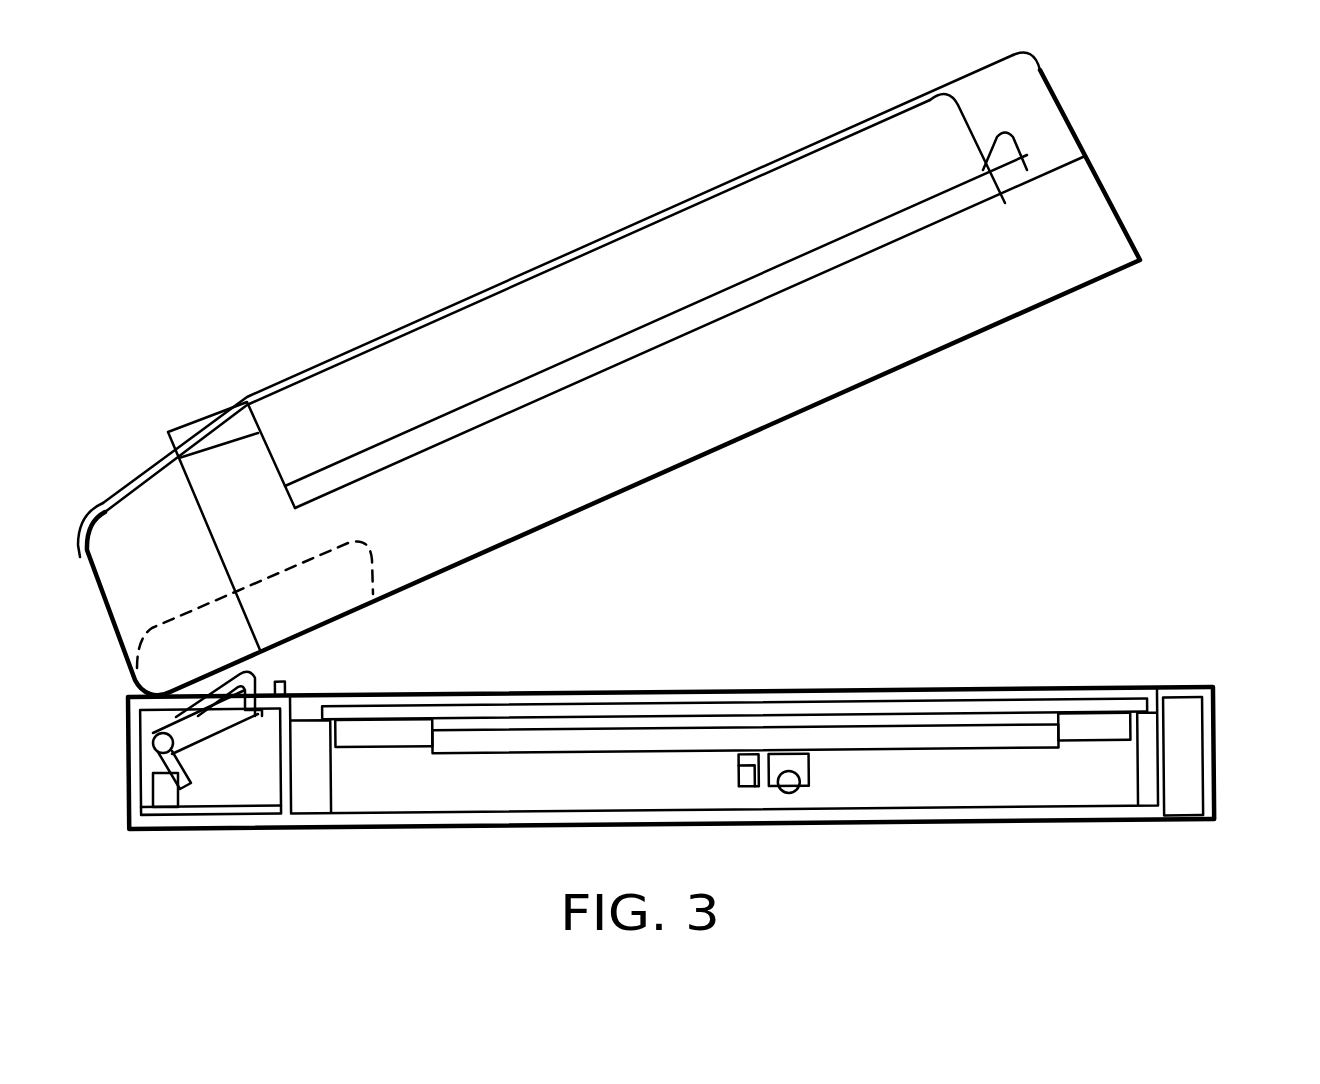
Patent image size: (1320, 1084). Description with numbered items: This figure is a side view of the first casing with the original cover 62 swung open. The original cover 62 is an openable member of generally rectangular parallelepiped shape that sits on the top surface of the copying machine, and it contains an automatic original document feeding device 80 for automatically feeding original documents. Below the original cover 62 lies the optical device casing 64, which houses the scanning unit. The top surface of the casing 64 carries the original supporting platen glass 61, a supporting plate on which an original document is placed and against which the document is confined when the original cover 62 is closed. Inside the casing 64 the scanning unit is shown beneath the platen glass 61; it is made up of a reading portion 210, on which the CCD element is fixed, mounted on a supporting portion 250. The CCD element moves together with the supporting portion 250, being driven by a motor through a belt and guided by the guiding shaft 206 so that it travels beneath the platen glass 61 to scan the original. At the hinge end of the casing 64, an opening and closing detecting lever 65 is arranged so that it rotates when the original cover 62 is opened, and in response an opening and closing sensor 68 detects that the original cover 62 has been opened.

The original cover 62 is at (1110, 200).
The automatic original document feeding device 80 is at (552, 261).
The optical device casing 64 is at (1215, 751).
The original supporting platen glass 61 is at (823, 694).
The reading portion 210 is at (403, 737).
The supporting portion 250 is at (948, 742).
The guiding shaft 206 is at (789, 793).
The opening and closing detecting lever 65 is at (184, 729).
The opening and closing sensor 68 is at (164, 796).